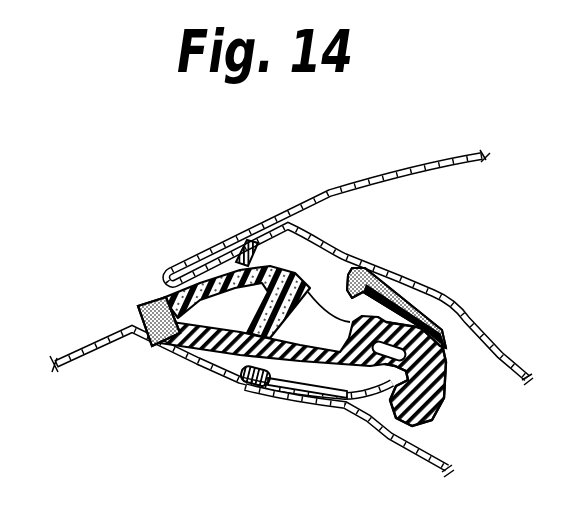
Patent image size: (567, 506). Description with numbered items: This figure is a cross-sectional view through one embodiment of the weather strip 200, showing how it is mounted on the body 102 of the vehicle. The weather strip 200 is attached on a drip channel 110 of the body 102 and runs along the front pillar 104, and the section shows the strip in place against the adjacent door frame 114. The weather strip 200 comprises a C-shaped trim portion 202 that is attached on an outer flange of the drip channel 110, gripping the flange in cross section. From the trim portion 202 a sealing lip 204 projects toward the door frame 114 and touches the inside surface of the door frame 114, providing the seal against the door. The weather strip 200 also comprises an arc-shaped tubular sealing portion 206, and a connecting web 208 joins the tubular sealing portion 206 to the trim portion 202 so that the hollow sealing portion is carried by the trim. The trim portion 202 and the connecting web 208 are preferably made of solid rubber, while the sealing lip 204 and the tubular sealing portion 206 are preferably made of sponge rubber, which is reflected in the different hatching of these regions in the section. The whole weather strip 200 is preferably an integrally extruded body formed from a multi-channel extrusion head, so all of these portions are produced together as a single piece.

The body 102 is at (187, 362).
The front pillar 104 is at (72, 352).
The drip channel 110 is at (378, 410).
The door frame 114 is at (388, 175).
The weather strip 200 is at (271, 255).
The trim portion 202 is at (446, 395).
The sealing lip 204 is at (382, 268).
The tubular sealing portion 206 is at (141, 306).
The connecting web 208 is at (322, 392).